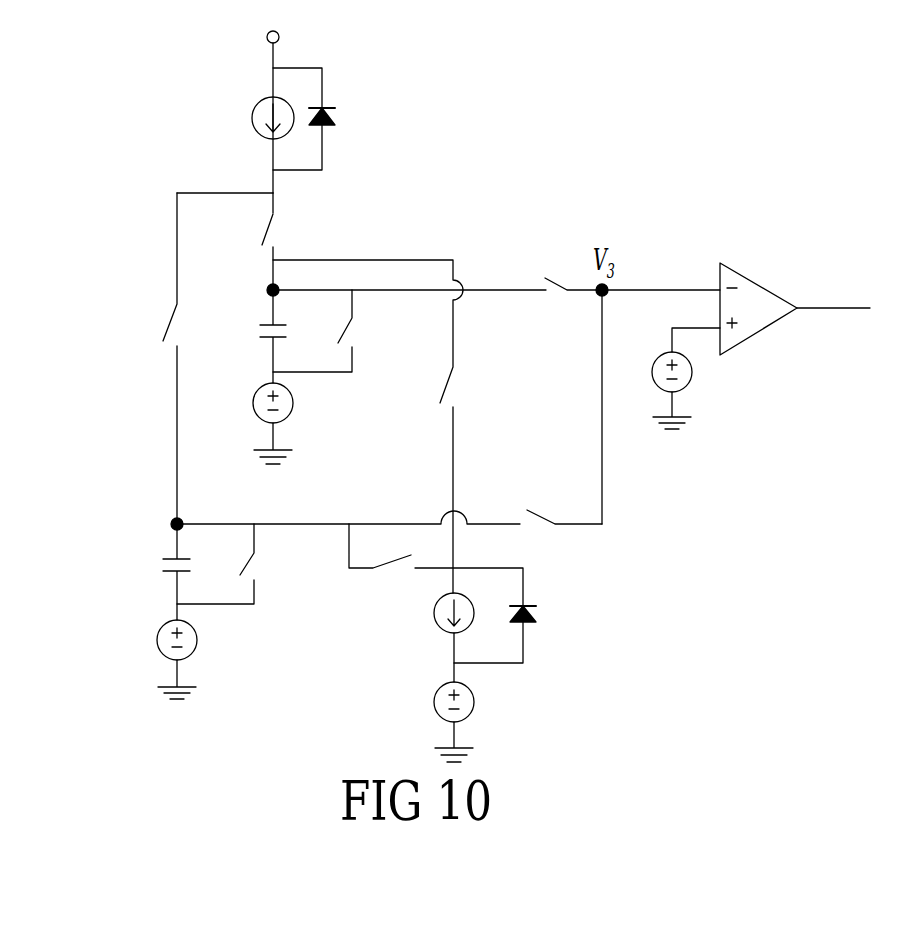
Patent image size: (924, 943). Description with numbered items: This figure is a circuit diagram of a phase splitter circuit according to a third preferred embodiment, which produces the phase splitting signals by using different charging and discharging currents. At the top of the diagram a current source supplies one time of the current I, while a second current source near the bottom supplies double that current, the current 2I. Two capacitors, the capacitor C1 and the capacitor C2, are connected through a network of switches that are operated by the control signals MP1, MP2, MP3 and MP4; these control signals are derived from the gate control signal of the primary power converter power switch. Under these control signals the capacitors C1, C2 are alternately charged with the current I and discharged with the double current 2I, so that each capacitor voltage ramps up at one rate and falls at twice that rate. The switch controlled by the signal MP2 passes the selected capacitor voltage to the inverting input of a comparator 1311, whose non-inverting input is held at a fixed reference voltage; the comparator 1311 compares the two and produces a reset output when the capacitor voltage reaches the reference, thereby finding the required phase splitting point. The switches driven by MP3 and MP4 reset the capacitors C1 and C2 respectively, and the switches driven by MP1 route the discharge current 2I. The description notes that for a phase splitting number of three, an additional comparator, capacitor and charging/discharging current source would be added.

The comparator 1311 is at (752, 283).
The current I is at (279, 112).
The current 2I is at (463, 677).
The capacitor C1 is at (250, 377).
The capacitor C2 is at (156, 611).
The control signal MP1 is at (389, 428).
The control signal MP2 is at (414, 393).
The control signal MP3 is at (336, 331).
The control signal MP4 is at (241, 564).